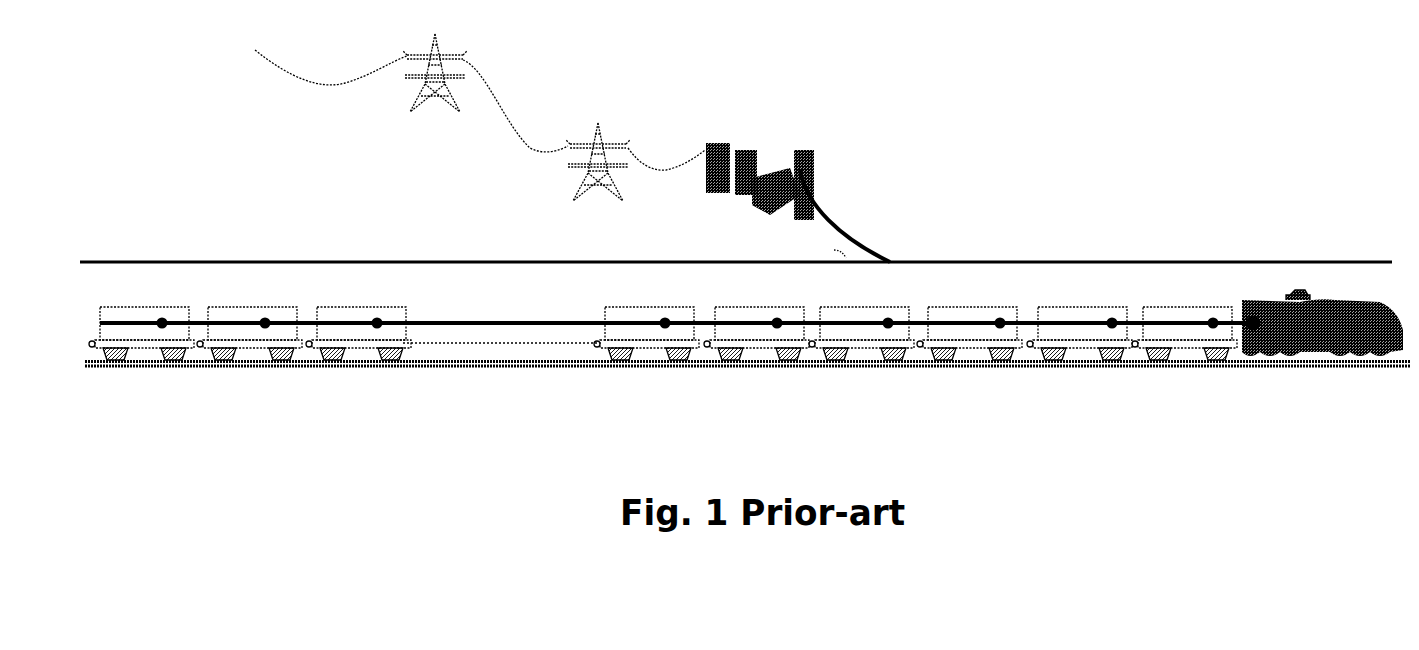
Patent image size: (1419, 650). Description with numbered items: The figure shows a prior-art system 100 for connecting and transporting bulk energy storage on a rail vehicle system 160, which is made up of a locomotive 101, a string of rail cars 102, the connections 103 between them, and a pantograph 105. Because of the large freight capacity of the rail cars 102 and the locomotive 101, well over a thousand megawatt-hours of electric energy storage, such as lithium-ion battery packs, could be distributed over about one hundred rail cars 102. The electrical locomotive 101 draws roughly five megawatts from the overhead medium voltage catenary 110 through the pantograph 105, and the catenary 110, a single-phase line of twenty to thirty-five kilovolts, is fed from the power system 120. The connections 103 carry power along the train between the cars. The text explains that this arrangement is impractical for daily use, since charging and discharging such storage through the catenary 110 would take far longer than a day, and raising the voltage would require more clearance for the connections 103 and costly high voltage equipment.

The prior-art system 100 is at (747, 355).
The electrical locomotive 101 is at (1290, 308).
The rail cars 102 is at (118, 330).
The connections 103 is at (168, 326).
The pantograph 105 is at (1333, 243).
The medium voltage catenary 110 is at (736, 242).
The power system 120 is at (572, 148).
The rail vehicle system 160 is at (675, 370).